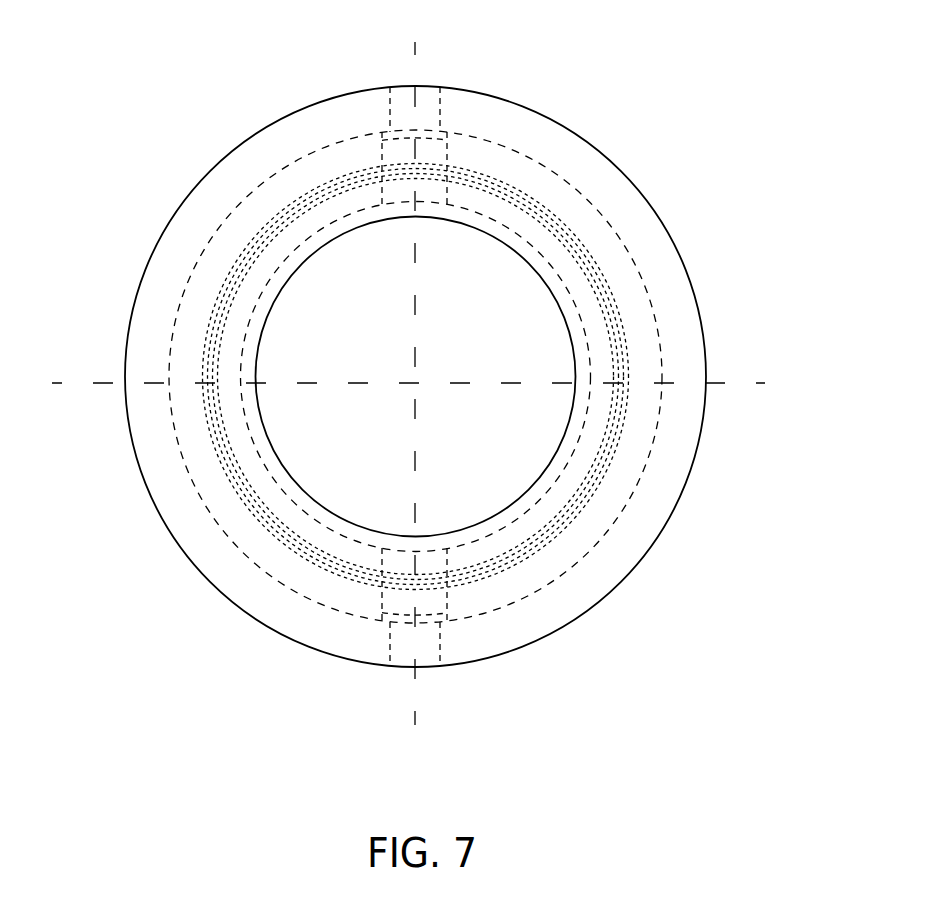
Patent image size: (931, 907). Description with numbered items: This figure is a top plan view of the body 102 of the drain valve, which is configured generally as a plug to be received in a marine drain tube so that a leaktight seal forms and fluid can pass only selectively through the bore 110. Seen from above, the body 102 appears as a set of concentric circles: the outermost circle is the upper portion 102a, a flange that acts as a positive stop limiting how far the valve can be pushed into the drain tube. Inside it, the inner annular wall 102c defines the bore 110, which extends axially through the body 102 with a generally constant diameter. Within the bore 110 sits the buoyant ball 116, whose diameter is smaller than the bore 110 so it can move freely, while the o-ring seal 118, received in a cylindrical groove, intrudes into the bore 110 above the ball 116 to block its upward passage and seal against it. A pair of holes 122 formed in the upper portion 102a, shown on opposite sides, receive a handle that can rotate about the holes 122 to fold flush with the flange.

The body 102 is at (598, 148).
The upper portion 102a is at (655, 260).
The inner annular wall 102c is at (598, 452).
The bore 110 is at (433, 447).
The buoyant ball 116 is at (505, 525).
The o-ring seal 118 is at (552, 483).
The holes 122 is at (422, 86).